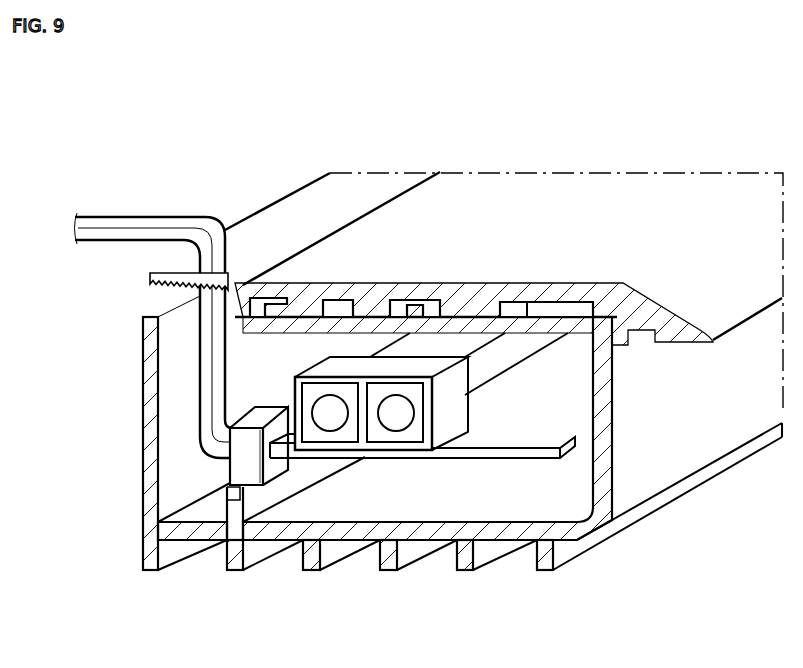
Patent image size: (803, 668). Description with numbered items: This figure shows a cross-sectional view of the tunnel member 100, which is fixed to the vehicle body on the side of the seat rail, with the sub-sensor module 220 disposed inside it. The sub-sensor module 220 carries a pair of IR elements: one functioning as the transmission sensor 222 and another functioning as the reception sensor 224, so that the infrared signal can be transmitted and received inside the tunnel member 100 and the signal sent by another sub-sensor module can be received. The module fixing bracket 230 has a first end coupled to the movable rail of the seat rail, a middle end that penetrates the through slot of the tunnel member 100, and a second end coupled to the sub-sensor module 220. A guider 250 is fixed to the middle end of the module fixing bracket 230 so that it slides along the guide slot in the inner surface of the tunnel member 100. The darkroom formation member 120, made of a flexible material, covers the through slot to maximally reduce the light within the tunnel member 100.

The tunnel member 100 is at (660, 463).
The darkroom formation member 120 is at (303, 196).
The sub-sensor module 220 is at (364, 454).
The transmission sensor 222 is at (328, 418).
The reception sensor 224 is at (398, 418).
The module fixing bracket 230 is at (118, 222).
The guider 250 is at (240, 462).